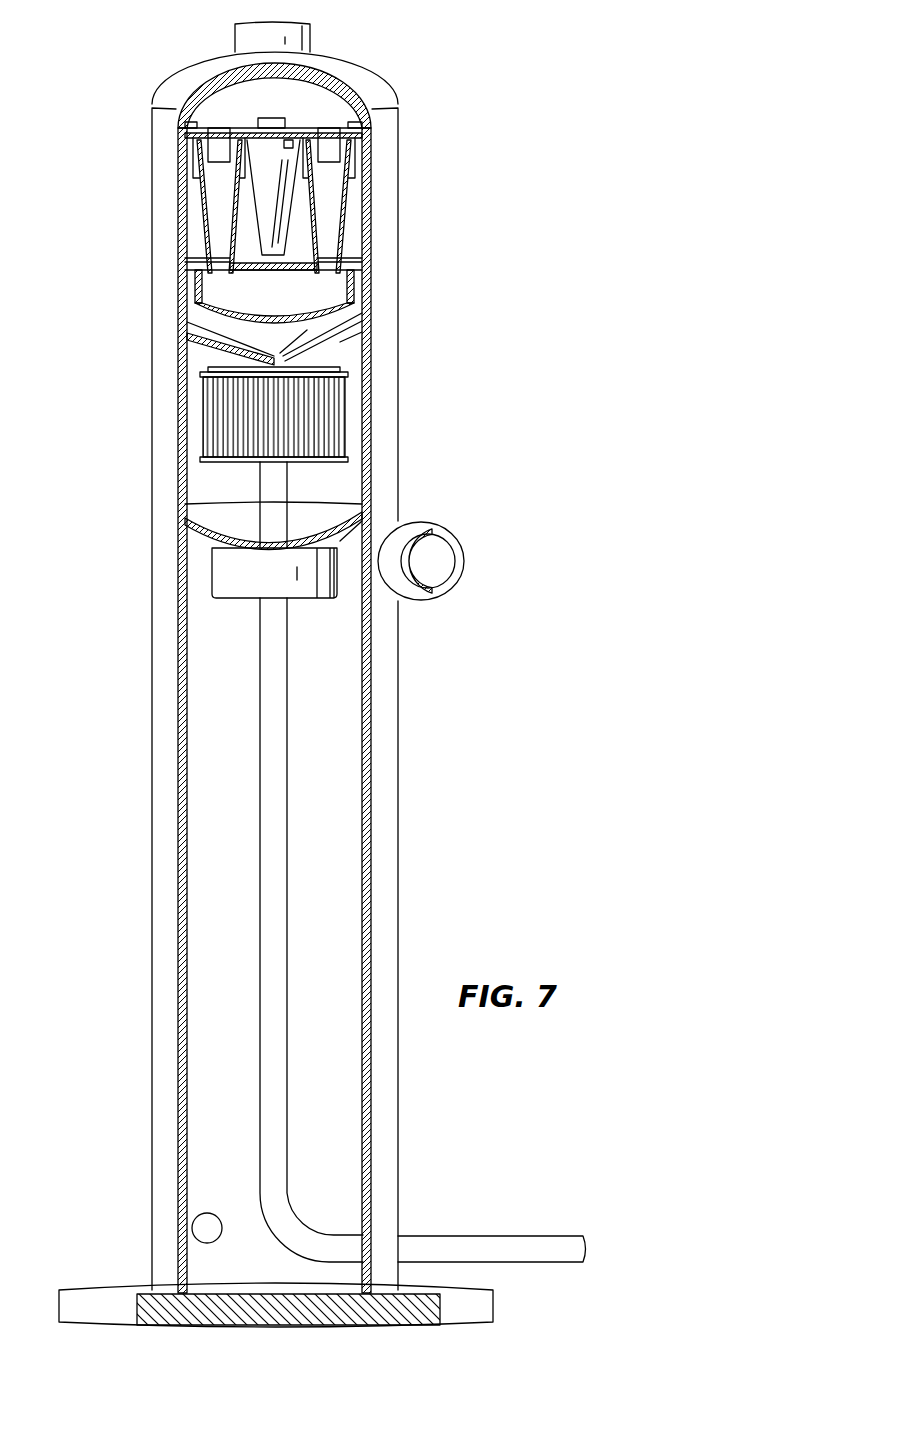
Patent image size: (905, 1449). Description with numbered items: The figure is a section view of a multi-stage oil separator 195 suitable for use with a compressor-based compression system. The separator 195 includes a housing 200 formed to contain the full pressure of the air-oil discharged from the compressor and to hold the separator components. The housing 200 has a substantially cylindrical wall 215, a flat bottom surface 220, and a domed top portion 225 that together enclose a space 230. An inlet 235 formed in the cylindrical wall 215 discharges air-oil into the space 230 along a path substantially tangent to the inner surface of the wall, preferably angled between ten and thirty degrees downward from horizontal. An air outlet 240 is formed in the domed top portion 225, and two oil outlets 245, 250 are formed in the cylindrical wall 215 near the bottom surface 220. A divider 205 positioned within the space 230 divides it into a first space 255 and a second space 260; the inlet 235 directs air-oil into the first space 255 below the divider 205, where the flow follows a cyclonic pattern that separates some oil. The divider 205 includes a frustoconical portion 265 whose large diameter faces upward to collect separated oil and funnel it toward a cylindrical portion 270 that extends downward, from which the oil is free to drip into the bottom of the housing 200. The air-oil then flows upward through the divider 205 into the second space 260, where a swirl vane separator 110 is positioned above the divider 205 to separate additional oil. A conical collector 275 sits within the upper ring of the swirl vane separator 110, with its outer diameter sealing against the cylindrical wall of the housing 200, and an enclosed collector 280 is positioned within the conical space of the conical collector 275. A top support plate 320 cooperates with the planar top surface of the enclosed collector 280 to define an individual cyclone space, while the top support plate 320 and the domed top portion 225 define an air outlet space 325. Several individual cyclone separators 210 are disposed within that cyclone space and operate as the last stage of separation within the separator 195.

The swirl vane separator 110 is at (212, 406).
The separator 195 is at (477, 76).
The housing 200 is at (173, 1089).
The divider 205 is at (208, 540).
The individual cyclone separators 210 is at (196, 184).
The cylindrical wall 215 is at (390, 798).
The bottom surface 220 is at (218, 1290).
The domed top portion 225 is at (177, 82).
The space 230 is at (344, 927).
The inlet 235 is at (452, 548).
The air outlet 240 is at (240, 46).
The oil outlet 245 is at (215, 1218).
The oil outlet 250 is at (398, 1248).
The first space 255 is at (210, 871).
The second space 260 is at (202, 488).
The frustoconical portion 265 is at (338, 512).
The cylindrical portion 270 is at (237, 585).
The conical collector 275 is at (345, 352).
The enclosed collector 280 is at (352, 284).
The top support plate 320 is at (298, 128).
The air outlet space 325 is at (218, 98).